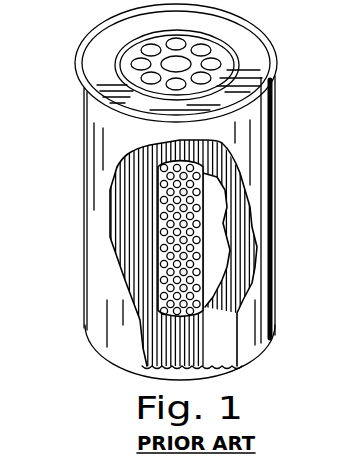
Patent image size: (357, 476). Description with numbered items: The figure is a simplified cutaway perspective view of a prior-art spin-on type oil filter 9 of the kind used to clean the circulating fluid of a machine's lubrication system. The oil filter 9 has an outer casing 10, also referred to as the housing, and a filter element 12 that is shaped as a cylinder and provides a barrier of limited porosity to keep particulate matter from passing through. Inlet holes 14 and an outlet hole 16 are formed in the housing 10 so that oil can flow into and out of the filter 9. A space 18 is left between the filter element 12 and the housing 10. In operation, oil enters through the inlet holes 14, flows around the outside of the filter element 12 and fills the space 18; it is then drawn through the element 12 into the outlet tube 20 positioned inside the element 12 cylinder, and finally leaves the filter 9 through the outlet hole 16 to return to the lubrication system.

The oil filter 9 is at (282, 150).
The outer casing 10 is at (98, 132).
The filter element 12 is at (117, 248).
The inlet holes 14 is at (136, 63).
The outlet hole 16 is at (192, 60).
The space 18 is at (120, 197).
The outlet tube 20 is at (198, 248).